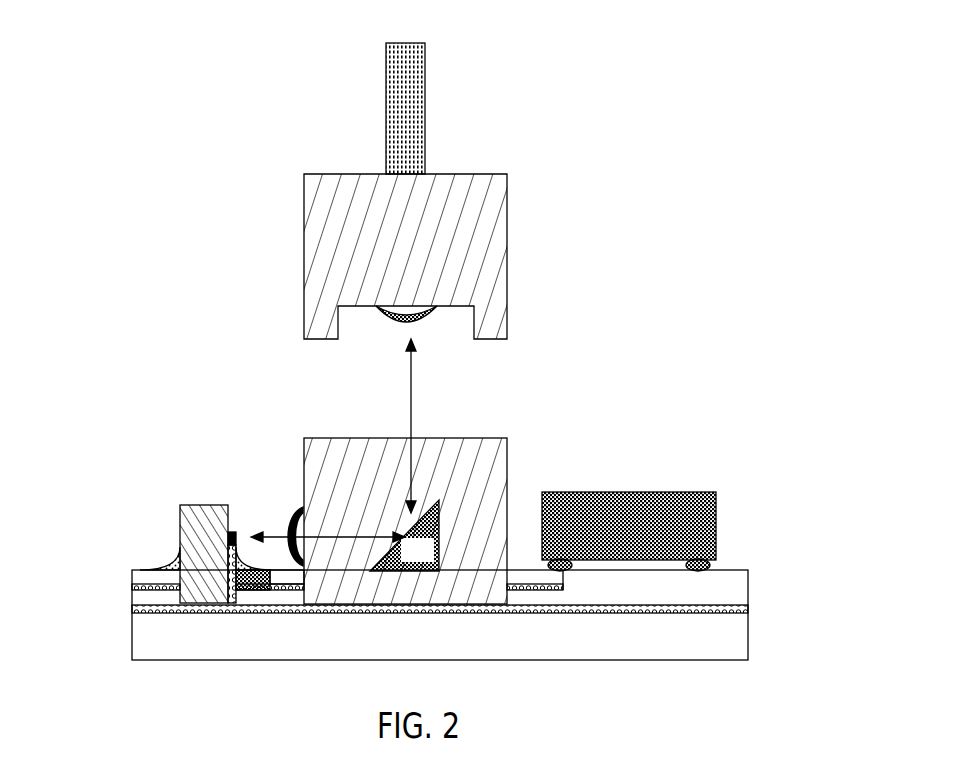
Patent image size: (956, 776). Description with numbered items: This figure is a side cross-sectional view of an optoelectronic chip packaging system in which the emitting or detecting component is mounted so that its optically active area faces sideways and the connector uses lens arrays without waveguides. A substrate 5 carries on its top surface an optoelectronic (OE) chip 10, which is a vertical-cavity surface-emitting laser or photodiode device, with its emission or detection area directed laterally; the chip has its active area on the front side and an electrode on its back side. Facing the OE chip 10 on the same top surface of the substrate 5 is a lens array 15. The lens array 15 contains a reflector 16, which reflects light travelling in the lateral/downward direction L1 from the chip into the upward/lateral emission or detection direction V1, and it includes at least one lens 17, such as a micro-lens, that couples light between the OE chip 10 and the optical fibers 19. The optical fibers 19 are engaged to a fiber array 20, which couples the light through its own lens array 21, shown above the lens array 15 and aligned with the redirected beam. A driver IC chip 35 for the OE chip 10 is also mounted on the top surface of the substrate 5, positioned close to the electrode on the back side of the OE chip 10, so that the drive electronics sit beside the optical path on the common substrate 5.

The substrate 5 is at (728, 637).
The optoelectronic (OE) chip 10 is at (193, 507).
The lens array 15 is at (323, 463).
The reflector 16 is at (404, 535).
The lens 17 is at (297, 511).
The optical fibers 19 is at (402, 137).
The fiber array 20 is at (515, 325).
The lens array 21 is at (410, 317).
The driver IC chip 35 is at (656, 492).
The upward/lateral direction V1 is at (410, 433).
The lateral/downward direction L1 is at (337, 540).